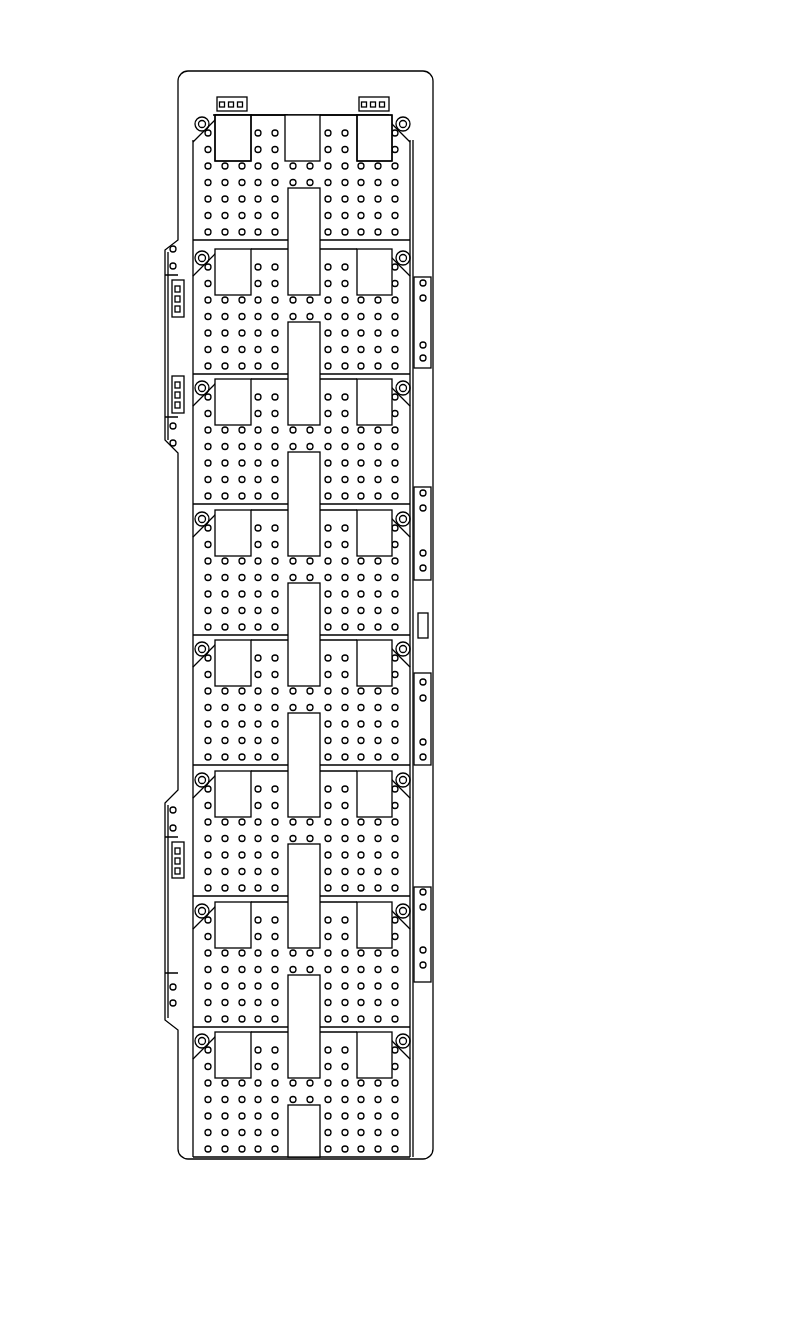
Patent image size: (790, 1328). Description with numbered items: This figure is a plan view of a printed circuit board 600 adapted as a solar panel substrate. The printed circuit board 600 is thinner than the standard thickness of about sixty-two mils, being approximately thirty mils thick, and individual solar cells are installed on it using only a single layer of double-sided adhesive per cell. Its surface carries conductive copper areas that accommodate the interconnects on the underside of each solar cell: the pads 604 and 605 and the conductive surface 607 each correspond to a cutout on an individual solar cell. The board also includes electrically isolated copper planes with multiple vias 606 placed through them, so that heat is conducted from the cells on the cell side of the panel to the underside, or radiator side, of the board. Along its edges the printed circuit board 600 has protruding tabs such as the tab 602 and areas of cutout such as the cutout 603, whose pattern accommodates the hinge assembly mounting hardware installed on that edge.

The printed circuit board 600 is at (532, 197).
The tab 602 is at (165, 345).
The cutout 603 is at (178, 582).
The pad 604 is at (238, 143).
The pad 605 is at (377, 146).
The vias 606 is at (398, 463).
The conductive surface 607 is at (309, 149).